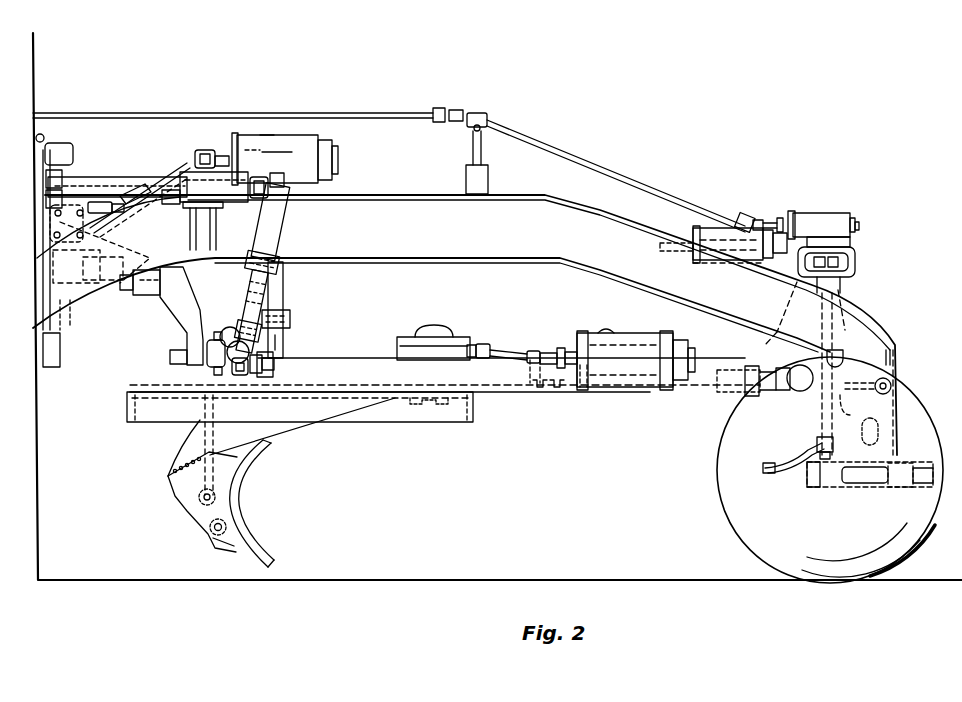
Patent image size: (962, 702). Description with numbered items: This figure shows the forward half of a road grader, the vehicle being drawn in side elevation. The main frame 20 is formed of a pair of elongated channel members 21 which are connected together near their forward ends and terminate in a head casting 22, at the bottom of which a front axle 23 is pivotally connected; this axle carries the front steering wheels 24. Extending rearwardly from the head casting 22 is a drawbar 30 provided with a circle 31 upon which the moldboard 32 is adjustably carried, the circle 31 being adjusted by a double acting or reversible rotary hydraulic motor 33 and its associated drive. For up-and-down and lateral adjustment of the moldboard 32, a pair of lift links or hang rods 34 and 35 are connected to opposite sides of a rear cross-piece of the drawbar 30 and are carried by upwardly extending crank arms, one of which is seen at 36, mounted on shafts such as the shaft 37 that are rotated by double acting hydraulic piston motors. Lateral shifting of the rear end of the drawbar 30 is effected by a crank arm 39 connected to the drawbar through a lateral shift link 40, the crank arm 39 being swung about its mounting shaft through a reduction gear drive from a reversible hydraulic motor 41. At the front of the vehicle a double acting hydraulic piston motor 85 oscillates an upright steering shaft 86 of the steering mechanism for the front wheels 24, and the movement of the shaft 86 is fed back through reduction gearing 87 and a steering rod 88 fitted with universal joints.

The main frame 20 is at (556, 190).
The channel members 21 is at (431, 274).
The head casting 22 is at (866, 390).
The front axle 23 is at (840, 488).
The front steering wheels 24 is at (722, 474).
The drawbar 30 is at (507, 370).
The circle 31 is at (461, 426).
The moldboard 32 is at (268, 502).
The rotary hydraulic motor 33 is at (628, 343).
The hang rod 34 is at (265, 293).
The hang rod 35 is at (282, 302).
The crank arm 36 is at (248, 198).
The shaft 37 is at (108, 183).
The crank arm 39 is at (180, 308).
The lateral shift link 40 is at (228, 330).
The hydraulic motor 41 is at (286, 152).
The hydraulic piston motor 85 is at (720, 232).
The steering shaft 86 is at (833, 323).
The reduction gearing 87 is at (828, 220).
The steering rod 88 is at (518, 138).